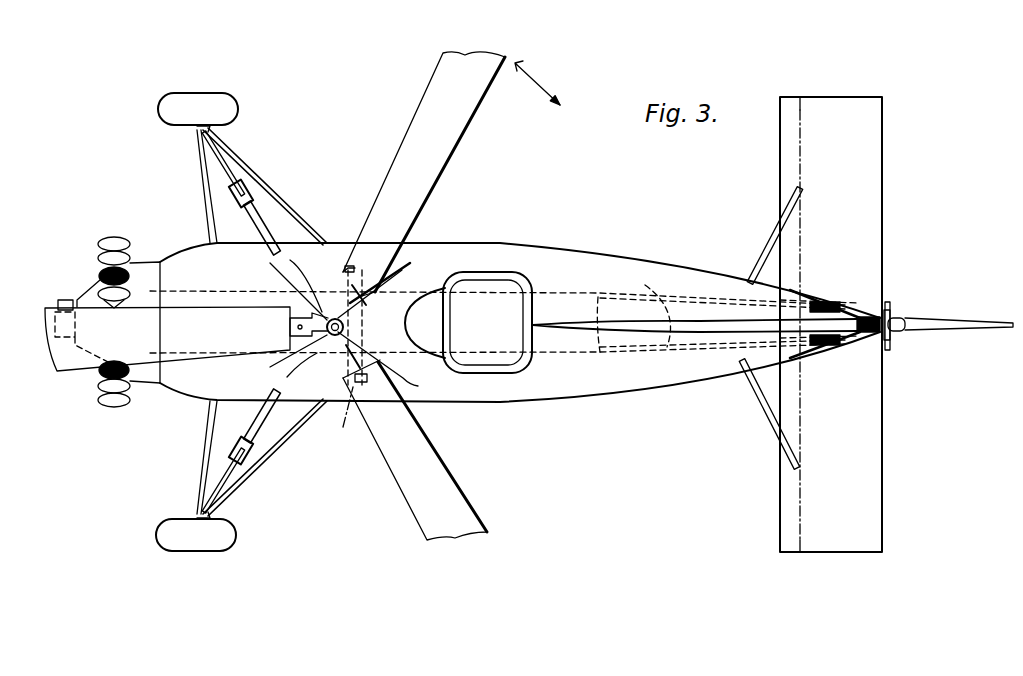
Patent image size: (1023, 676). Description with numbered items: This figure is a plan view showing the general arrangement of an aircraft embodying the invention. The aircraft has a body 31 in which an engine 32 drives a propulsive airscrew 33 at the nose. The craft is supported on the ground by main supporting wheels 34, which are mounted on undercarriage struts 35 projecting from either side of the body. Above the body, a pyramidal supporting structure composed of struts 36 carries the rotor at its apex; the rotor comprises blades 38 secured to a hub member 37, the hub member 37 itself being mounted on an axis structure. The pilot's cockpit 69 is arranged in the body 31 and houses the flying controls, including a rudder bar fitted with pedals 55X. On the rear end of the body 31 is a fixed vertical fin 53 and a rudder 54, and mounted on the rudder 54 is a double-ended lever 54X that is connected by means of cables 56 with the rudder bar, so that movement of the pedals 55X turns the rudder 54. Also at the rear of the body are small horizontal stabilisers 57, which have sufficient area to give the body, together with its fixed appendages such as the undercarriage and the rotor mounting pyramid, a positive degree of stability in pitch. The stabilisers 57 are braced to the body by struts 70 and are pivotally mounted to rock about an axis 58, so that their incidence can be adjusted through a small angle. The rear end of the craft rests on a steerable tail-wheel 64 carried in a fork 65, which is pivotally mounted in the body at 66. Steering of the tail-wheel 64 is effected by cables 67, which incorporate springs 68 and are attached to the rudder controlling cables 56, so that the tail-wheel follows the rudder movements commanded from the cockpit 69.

The body 31 is at (512, 250).
The engine 32 is at (100, 253).
The propulsive airscrew 33 is at (65, 300).
The main supporting wheels 34 is at (222, 112).
The undercarriage struts 35 is at (247, 180).
The struts 36 is at (297, 287).
The hub member 37 is at (333, 317).
The blades 38 is at (450, 118).
The fixed vertical fin 53 is at (618, 324).
The rudder 54 is at (1002, 325).
The double-ended lever 54X is at (892, 305).
The pedals 55X is at (335, 422).
The cables 56 is at (644, 304).
The horizontal stabilisers 57 is at (831, 324).
The axis 58 is at (800, 150).
The steerable tail-wheel 64 is at (896, 334).
The fork 65 is at (886, 347).
The pivotal mounting 66 is at (860, 340).
The cables 67 is at (600, 352).
The springs 68 is at (824, 318).
The pilot's cockpit 69 is at (483, 317).
The struts 70 is at (770, 247).